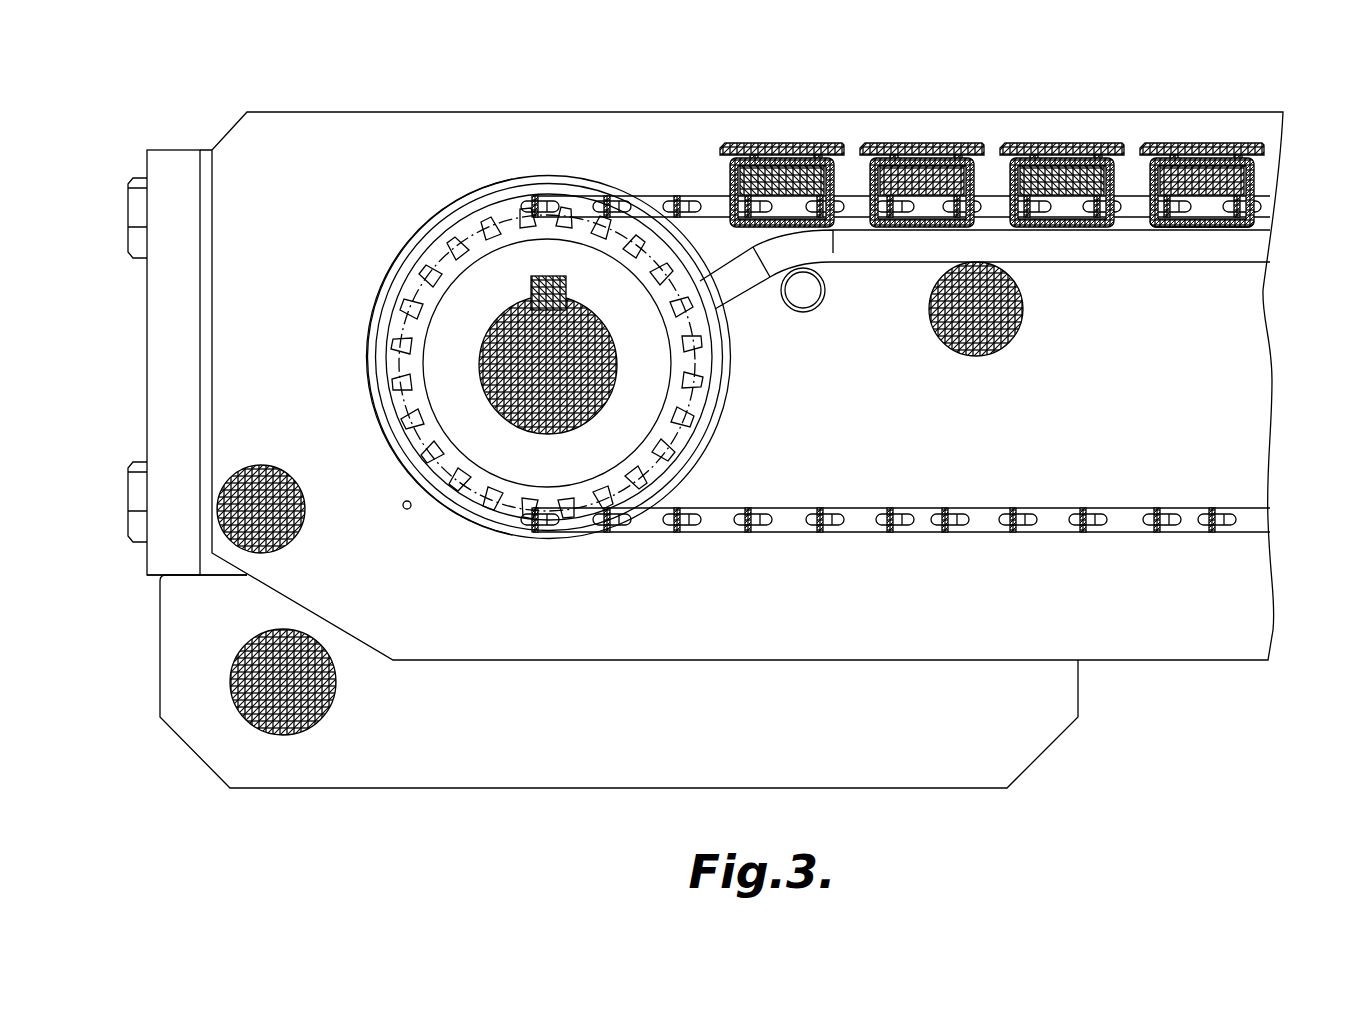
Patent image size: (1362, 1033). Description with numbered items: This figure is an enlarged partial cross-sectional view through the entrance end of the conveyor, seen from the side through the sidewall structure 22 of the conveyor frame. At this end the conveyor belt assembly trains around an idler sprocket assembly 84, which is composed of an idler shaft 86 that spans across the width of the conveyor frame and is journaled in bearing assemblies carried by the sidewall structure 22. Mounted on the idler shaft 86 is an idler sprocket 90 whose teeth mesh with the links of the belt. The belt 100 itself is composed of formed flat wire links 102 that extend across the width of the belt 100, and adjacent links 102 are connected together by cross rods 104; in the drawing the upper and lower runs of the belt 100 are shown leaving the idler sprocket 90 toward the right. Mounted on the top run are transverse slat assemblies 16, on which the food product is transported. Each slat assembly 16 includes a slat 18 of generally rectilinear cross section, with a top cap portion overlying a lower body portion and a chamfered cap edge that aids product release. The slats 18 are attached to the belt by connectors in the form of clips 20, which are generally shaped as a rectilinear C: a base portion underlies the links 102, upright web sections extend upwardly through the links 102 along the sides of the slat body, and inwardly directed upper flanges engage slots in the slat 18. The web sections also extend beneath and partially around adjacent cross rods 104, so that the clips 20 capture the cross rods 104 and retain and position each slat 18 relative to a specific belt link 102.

The slat assembly 16 is at (1239, 161).
The slat 18 is at (1166, 141).
The clip 20 is at (1325, 153).
The sidewall structure 22 is at (758, 113).
The idler sprocket assembly 84 is at (477, 198).
The idler shaft 86 is at (503, 313).
The idler sprocket 90 is at (480, 480).
The belt 100 is at (895, 518).
The flat wire link 102 is at (857, 527).
The cross rod 104 is at (1312, 253).